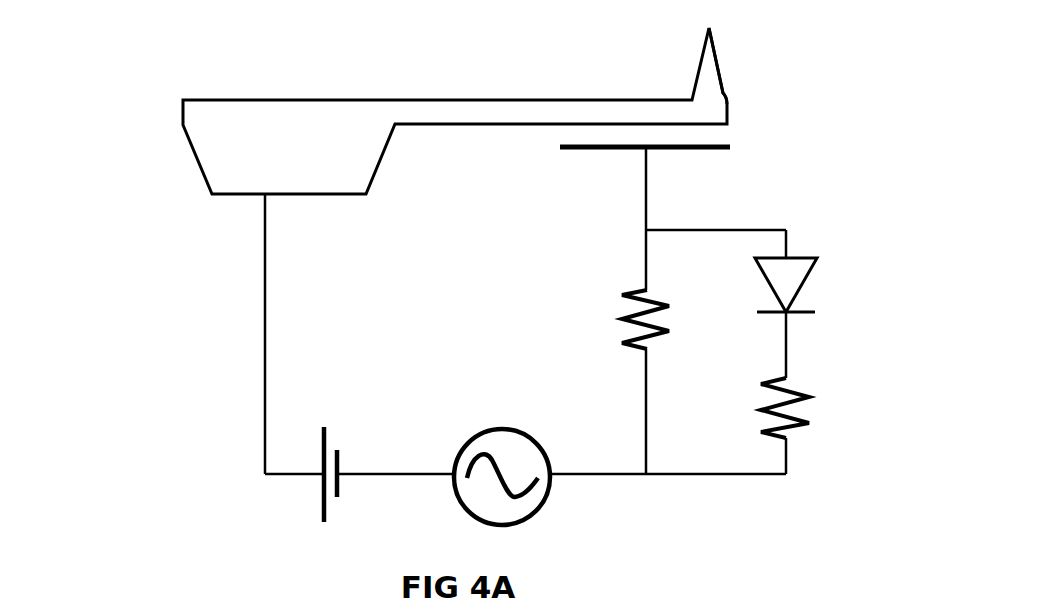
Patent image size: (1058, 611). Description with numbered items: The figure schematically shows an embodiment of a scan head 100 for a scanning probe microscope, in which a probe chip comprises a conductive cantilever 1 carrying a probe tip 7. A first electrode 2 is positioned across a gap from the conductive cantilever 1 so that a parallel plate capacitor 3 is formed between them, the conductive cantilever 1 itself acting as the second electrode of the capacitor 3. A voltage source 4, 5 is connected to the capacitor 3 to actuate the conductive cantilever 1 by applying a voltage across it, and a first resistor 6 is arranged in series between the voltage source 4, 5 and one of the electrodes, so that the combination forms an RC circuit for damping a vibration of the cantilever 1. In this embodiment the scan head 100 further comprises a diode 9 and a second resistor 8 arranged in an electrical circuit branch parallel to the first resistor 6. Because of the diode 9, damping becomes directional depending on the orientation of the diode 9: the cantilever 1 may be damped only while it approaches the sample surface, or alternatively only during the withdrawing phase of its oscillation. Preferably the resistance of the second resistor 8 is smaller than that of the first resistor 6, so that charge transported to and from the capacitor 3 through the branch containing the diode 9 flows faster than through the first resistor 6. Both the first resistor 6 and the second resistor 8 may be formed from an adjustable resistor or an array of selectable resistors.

The scan head 100 is at (120, 55).
The conductive cantilever 1 is at (445, 112).
The probe tip 7 is at (708, 69).
The first electrode 2 is at (702, 152).
The capacitor 3 is at (733, 136).
The voltage source 4 is at (350, 497).
The voltage source 5 is at (552, 503).
The first resistor 6 is at (625, 305).
The diode 9 is at (765, 287).
The second resistor 8 is at (765, 398).